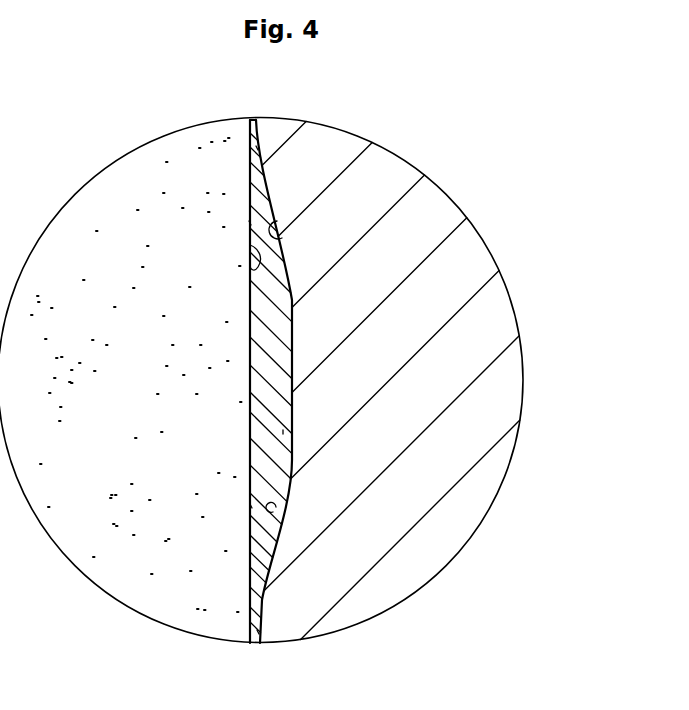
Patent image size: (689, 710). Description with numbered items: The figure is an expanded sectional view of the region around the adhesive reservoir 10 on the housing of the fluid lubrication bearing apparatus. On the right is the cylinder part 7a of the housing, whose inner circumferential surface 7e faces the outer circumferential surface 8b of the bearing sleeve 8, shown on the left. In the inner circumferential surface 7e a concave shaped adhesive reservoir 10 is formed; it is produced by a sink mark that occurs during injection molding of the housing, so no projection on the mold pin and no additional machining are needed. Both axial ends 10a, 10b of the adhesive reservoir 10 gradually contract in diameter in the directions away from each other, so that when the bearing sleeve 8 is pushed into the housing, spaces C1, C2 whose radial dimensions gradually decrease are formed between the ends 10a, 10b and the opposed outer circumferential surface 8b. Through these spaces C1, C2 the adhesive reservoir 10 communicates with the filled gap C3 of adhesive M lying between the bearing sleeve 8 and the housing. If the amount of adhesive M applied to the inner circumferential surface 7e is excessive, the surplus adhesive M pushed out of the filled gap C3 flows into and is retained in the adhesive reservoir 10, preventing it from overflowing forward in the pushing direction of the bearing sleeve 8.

The cylinder part 7a is at (492, 317).
The inner circumferential surface 7e is at (256, 130).
The bearing sleeve 8 is at (117, 492).
The outer circumferential surface 8b is at (250, 245).
The adhesive reservoir 10 is at (264, 378).
The axial end of adhesive reservoir 10a is at (273, 512).
The axial end of adhesive reservoir 10b is at (282, 238).
The adhesive M is at (283, 432).
The space C1 is at (246, 498).
The space C2 is at (242, 213).
The filled gap C3 is at (270, 150).